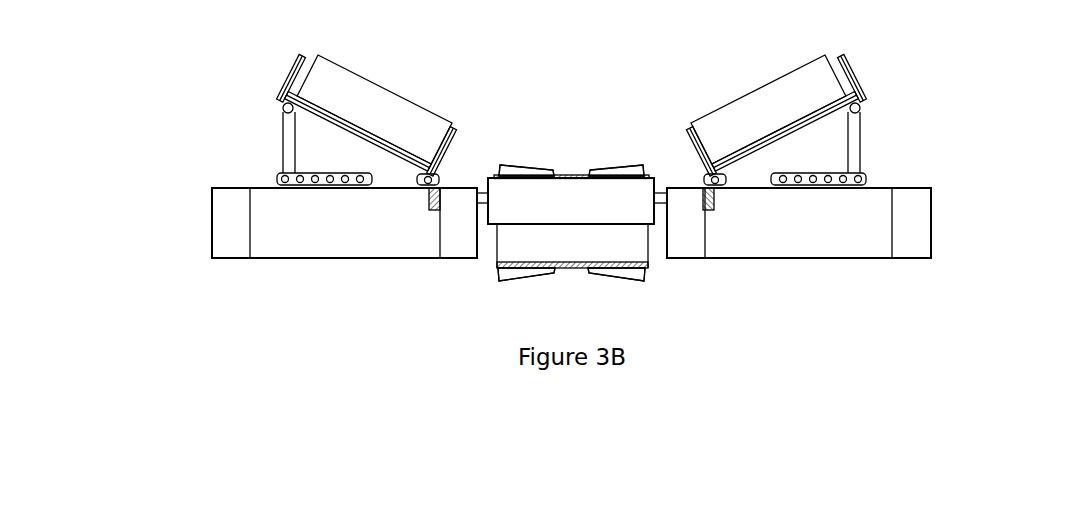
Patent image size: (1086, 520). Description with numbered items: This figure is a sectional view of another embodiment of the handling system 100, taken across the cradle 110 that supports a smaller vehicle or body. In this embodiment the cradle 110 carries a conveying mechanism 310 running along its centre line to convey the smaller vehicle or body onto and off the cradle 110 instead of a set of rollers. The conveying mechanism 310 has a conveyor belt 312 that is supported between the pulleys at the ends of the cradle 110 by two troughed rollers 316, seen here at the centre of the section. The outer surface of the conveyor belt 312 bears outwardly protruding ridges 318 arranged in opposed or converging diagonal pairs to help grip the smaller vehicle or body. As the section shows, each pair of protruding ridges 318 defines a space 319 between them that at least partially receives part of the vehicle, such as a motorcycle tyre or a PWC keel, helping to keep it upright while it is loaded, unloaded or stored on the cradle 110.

The handling system 100 is at (980, 82).
The cradle 110 is at (198, 198).
The conveying mechanism 310 is at (657, 267).
The conveyor belt 312 is at (493, 267).
The troughed rollers 316 is at (553, 216).
The protruding ridges 318 is at (515, 166).
The space 319 is at (570, 170).